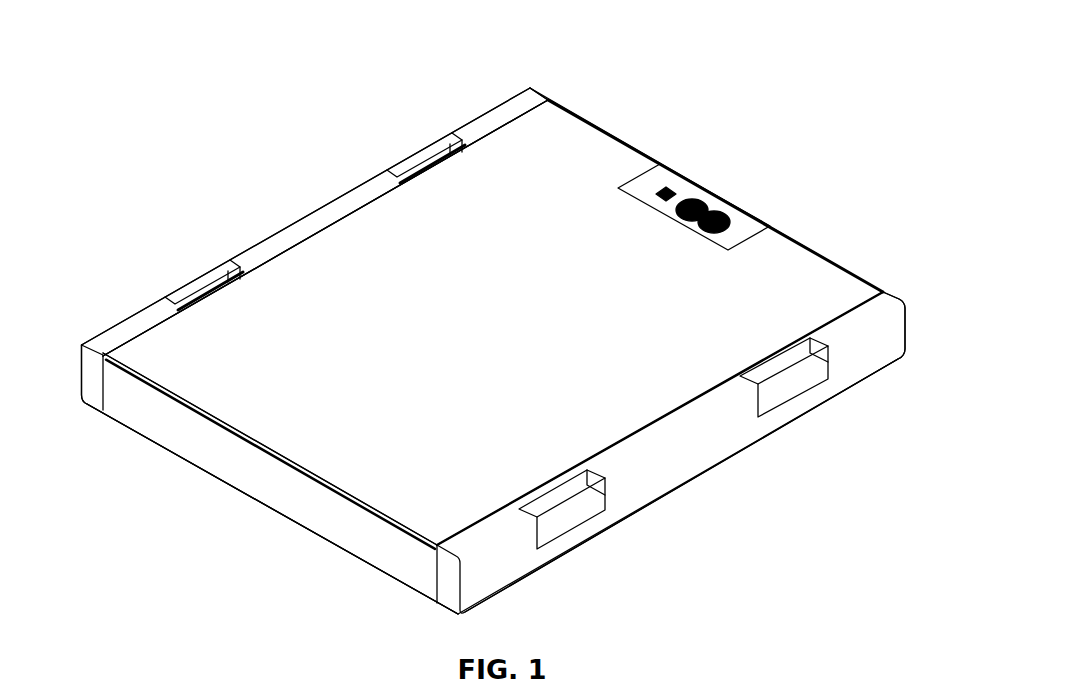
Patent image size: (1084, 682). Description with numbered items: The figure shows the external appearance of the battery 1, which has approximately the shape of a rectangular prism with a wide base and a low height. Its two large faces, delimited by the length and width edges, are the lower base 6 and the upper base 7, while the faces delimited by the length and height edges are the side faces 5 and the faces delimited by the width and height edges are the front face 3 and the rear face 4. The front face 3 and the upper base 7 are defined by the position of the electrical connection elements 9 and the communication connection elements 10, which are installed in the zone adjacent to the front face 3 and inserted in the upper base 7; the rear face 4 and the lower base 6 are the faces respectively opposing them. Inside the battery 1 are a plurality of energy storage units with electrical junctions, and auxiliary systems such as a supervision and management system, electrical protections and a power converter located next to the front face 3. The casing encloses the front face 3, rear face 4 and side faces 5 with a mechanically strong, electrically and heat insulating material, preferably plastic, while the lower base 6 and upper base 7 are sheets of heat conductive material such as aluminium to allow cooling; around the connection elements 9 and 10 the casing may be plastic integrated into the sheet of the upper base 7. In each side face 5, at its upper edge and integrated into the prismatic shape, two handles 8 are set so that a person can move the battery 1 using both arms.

The battery 1 is at (178, 170).
The front face 3 is at (806, 232).
The rear face 4 is at (262, 482).
The side faces 5 is at (322, 218).
The lower base 6 is at (355, 560).
The upper base 7 is at (218, 393).
The handles 8 is at (180, 290).
The electrical connection elements 9 is at (717, 213).
The communication connection elements 10 is at (672, 192).